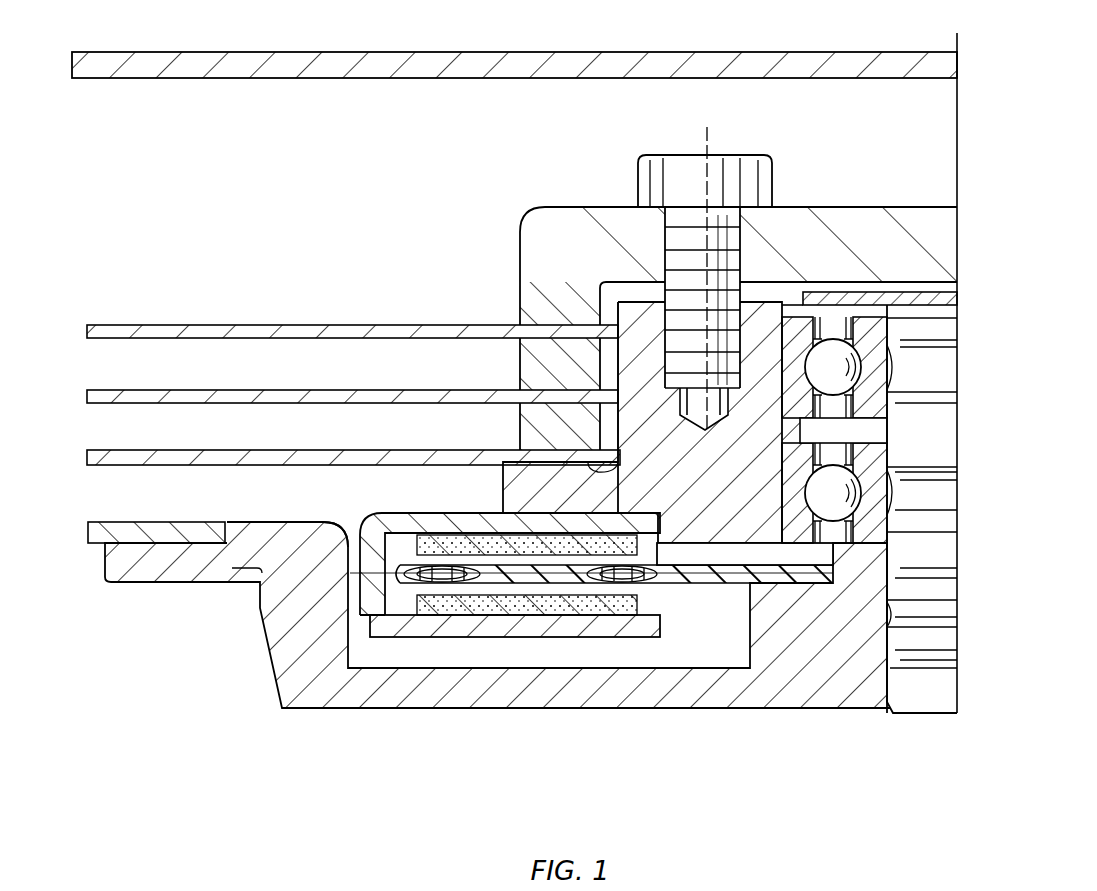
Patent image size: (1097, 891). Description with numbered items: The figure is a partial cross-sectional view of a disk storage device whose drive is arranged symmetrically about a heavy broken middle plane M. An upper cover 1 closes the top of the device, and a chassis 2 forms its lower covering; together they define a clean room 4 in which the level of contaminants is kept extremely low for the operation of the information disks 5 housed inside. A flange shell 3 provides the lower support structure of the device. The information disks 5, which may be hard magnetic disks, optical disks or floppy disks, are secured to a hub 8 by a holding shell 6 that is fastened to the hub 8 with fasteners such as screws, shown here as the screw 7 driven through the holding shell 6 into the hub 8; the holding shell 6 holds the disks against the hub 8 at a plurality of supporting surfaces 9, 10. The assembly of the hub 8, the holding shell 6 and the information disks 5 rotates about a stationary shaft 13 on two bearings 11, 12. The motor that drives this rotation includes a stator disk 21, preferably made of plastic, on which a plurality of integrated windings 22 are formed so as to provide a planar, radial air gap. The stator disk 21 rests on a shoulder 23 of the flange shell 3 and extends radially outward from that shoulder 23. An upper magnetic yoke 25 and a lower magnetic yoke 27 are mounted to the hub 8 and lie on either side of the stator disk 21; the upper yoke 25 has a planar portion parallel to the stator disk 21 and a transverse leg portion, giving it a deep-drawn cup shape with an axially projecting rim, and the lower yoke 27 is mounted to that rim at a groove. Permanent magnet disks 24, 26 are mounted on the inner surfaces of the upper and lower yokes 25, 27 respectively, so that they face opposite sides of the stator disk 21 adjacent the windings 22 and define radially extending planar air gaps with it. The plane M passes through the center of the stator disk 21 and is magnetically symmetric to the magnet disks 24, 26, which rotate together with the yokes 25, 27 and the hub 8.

The upper cover 1 is at (413, 60).
The chassis 2 is at (93, 547).
The flange shell 3 is at (300, 703).
The clean room 4 is at (425, 153).
The information disks 5 is at (323, 450).
The holding shell 6 is at (562, 220).
The bolt 7 is at (747, 170).
The hub 8 is at (718, 492).
The supporting surface 9 is at (503, 467).
The supporting surface 10 is at (618, 358).
The bearing 11 is at (820, 378).
The bearing 12 is at (820, 504).
The stationary shaft 13 is at (910, 698).
The stator disk 21 is at (532, 577).
The integrated windings 22 is at (617, 577).
The shoulder 23 is at (783, 580).
The permanent magnet disk 24 is at (425, 515).
The upper magnetic yoke 25 is at (353, 537).
The permanent magnet disk 26 is at (443, 607).
The lower magnetic yoke 27 is at (543, 628).
The middle plane M is at (357, 705).